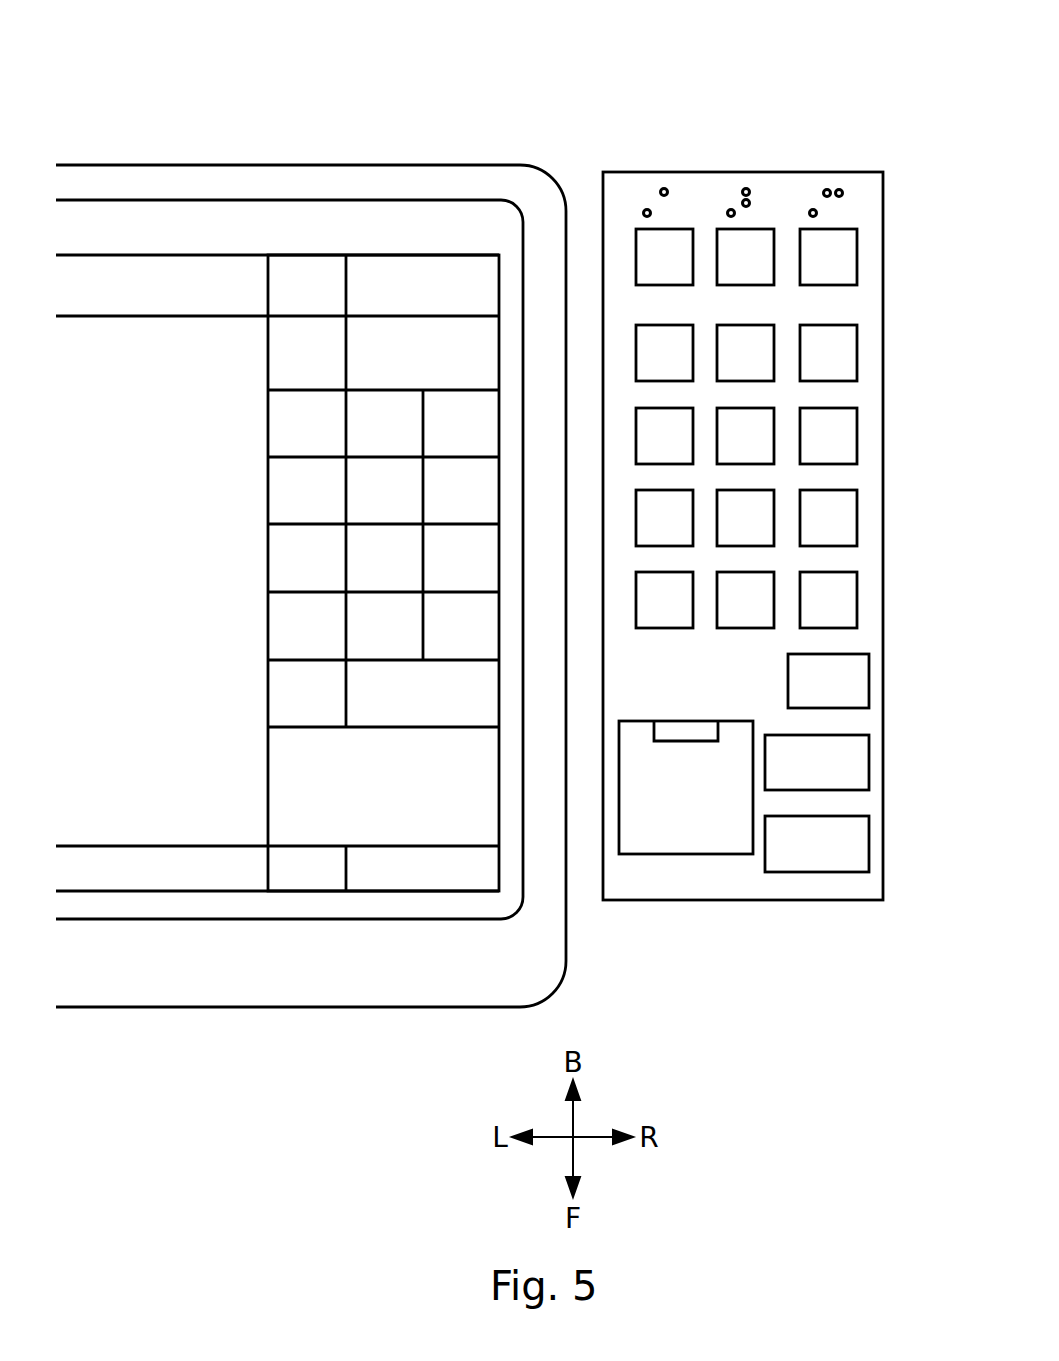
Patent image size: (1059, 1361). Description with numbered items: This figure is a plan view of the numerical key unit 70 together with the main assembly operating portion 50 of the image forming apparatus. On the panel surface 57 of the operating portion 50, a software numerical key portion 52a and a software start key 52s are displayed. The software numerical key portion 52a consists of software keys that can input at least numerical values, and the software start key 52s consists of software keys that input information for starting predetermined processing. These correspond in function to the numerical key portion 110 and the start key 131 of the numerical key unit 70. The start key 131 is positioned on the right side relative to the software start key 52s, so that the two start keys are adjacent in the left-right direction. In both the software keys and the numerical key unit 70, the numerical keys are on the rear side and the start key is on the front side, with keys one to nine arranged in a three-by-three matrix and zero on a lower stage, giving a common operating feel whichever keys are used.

The operating portion 50 is at (252, 126).
The panel surface 57 is at (120, 230).
The software numerical key portion 52a is at (243, 390).
The software start key 52s is at (278, 797).
The numerical key unit 70 is at (823, 117).
The numerical key portion 110 is at (897, 325).
The start key 131 is at (692, 850).